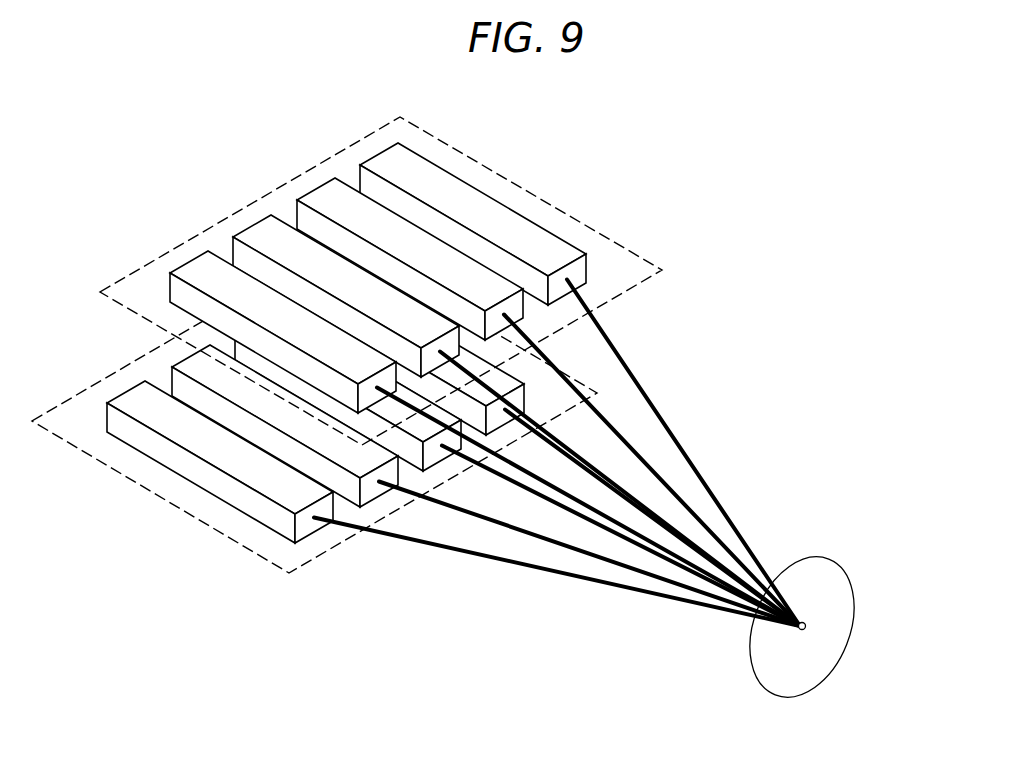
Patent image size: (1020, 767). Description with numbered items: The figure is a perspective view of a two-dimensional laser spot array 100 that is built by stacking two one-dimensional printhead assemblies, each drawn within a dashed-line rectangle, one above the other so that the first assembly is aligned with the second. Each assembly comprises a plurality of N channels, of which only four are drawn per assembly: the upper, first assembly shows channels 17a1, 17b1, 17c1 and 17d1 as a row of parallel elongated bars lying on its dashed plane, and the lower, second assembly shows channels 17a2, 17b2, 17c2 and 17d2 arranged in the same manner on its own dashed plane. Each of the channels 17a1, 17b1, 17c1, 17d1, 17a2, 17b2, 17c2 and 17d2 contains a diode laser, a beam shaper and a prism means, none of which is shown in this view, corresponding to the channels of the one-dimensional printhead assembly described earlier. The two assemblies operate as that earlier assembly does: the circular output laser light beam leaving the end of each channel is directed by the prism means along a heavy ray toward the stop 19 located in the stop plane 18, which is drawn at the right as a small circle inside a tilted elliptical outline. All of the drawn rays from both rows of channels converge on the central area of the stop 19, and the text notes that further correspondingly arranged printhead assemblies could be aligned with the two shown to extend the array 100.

The two-dimensional laser spot array 100 is at (730, 150).
The channel 17a1 is at (380, 153).
The channel 17b1 is at (315, 188).
The channel 17c1 is at (252, 228).
The channel 17d1 is at (187, 260).
The channel 17a2 is at (520, 392).
The channel 17b2 is at (432, 457).
The channel 17c2 is at (185, 350).
The channel 17d2 is at (130, 394).
The stop plane 18 is at (833, 578).
The stop 19 is at (805, 628).